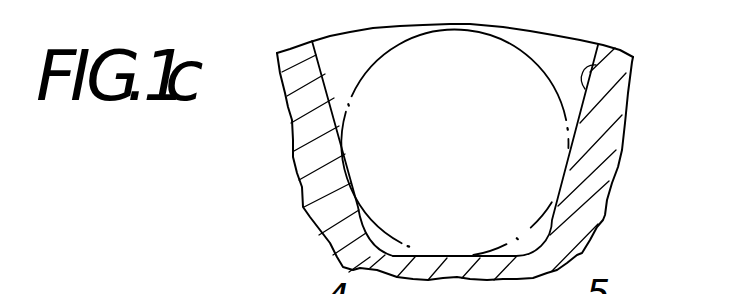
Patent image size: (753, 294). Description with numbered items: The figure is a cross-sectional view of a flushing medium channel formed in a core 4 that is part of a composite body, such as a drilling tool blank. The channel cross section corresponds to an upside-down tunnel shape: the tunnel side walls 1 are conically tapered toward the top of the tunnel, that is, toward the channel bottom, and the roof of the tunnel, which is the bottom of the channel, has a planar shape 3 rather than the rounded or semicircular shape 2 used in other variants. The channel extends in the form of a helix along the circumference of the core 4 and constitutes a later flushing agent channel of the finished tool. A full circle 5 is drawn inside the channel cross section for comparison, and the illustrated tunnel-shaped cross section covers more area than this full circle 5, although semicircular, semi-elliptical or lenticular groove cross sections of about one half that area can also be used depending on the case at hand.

The tunnel side wall 1 is at (315, 60).
The rounded or semicircular shape 2 is at (455, 28).
The planar shape 3 is at (435, 255).
The core 4 is at (603, 140).
The full circle 5 is at (537, 58).